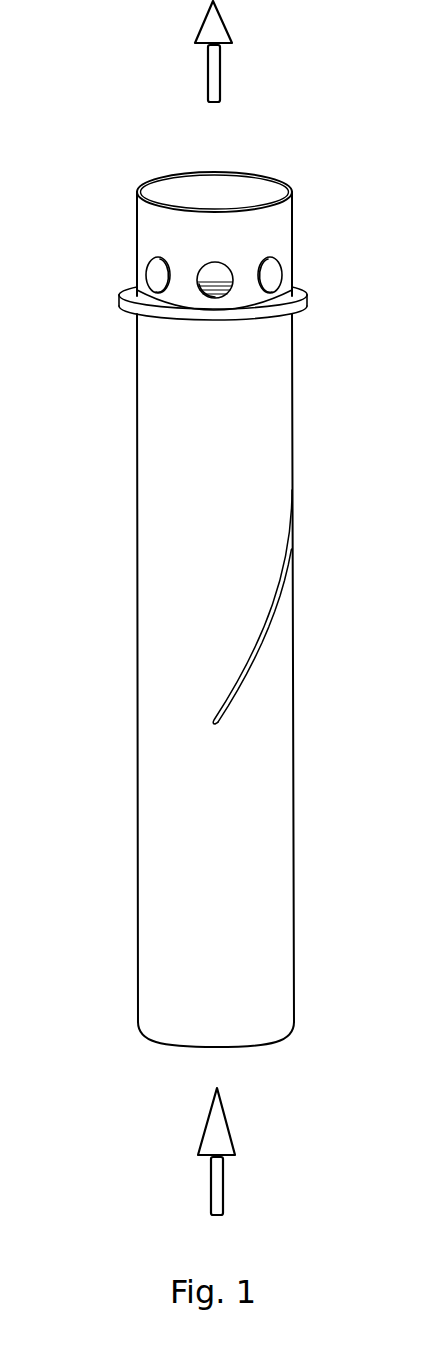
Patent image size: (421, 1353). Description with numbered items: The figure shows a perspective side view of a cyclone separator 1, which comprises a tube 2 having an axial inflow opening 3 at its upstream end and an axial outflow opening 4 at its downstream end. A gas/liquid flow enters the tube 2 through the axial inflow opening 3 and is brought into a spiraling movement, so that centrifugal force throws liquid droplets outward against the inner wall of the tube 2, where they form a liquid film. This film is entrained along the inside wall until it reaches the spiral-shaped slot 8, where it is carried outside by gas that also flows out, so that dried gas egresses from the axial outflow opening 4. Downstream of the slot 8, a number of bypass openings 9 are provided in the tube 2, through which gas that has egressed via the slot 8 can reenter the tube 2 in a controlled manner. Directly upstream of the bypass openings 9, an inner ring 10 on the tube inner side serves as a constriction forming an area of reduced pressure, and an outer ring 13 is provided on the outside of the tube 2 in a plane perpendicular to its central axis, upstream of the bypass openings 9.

The cyclone separator 1 is at (307, 185).
The tube 2 is at (210, 673).
The axial inflow opening 3 is at (165, 1043).
The axial outflow opening 4 is at (178, 193).
The spiral-shaped slot 8 is at (291, 572).
The bypass openings 9 is at (215, 270).
The inner ring 10 is at (232, 280).
The outer ring 13 is at (309, 297).